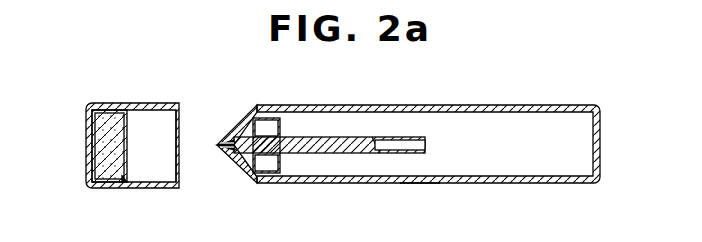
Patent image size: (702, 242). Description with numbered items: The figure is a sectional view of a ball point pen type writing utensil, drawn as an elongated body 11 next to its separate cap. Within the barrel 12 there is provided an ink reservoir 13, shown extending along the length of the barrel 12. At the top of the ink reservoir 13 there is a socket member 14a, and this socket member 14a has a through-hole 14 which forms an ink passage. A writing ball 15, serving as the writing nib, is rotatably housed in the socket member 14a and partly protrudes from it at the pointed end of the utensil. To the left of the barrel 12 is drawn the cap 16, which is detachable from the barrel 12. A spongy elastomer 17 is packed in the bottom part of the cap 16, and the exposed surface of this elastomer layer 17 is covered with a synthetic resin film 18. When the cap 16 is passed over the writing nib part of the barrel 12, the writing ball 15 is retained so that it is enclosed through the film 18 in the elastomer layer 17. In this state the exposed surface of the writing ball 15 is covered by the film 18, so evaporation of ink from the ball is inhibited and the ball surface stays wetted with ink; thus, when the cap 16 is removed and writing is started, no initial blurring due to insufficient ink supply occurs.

The tubular casing 11 is at (362, 103).
The barrel 12 is at (421, 183).
The ink reservoir 13 is at (326, 154).
The through-hole 14 is at (233, 160).
The socket member 14a is at (223, 135).
The writing ball 15 is at (217, 145).
The cap 16 is at (130, 104).
The spongy elastomer 17 is at (90, 153).
The synthetic resin film 18 is at (126, 181).